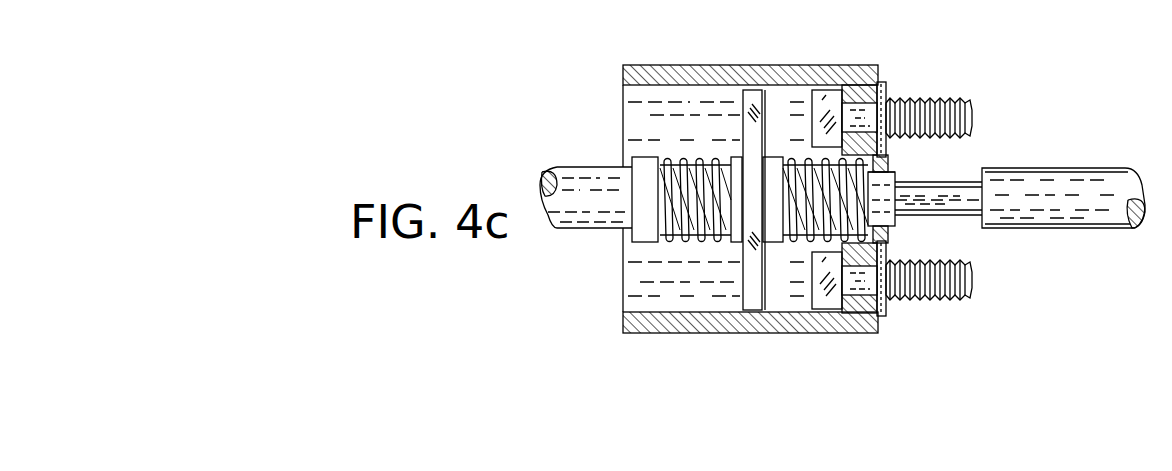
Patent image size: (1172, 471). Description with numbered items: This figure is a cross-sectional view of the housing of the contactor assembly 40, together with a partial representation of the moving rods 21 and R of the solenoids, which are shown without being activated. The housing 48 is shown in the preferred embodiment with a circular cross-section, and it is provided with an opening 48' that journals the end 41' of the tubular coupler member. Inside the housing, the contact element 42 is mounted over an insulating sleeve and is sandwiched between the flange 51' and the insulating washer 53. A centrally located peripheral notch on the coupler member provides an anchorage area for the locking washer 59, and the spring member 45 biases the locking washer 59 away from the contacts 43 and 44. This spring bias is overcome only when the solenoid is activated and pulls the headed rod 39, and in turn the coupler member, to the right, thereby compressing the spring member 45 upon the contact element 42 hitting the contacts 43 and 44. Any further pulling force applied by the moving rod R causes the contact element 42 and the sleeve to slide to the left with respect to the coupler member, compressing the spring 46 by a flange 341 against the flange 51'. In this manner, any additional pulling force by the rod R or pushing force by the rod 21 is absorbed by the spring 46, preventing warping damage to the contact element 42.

The contactor assembly 40 is at (778, 52).
The housing 48 is at (645, 48).
The opening 48' is at (946, 152).
The contact element 42 is at (750, 88).
The locking washer 59 is at (780, 165).
The contact 43 is at (840, 68).
The contact 44 is at (845, 330).
The moving rod 21 is at (590, 188).
The spring 46 is at (680, 159).
The left spring 341 is at (645, 230).
The flange 51' is at (717, 231).
The spring member 45 is at (867, 184).
The end of tubular coupler member 41' is at (938, 222).
The headed rod 39 is at (960, 200).
The moving rod R is at (1065, 200).
The insulating washer 53 is at (767, 230).